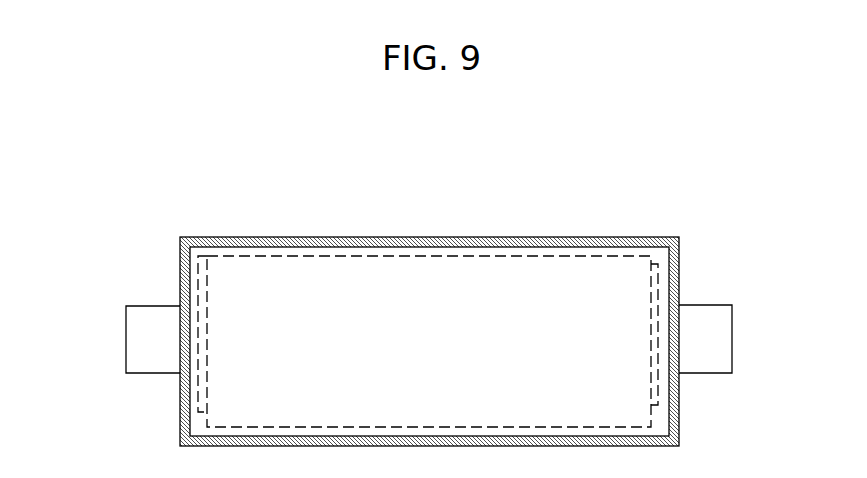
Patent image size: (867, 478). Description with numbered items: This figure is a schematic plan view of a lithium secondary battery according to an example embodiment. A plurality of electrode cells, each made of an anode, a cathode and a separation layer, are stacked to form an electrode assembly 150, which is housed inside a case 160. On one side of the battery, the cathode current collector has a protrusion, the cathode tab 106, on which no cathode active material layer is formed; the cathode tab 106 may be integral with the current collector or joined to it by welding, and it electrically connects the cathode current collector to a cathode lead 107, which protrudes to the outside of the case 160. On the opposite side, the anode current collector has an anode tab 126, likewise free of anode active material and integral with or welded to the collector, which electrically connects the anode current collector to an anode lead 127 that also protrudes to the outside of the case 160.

The case 160 is at (480, 237).
The electrode assembly 150 is at (578, 255).
The cathode tab 106 is at (203, 405).
The anode tab 126 is at (658, 405).
The cathode lead 107 is at (133, 340).
The anode lead 127 is at (725, 339).